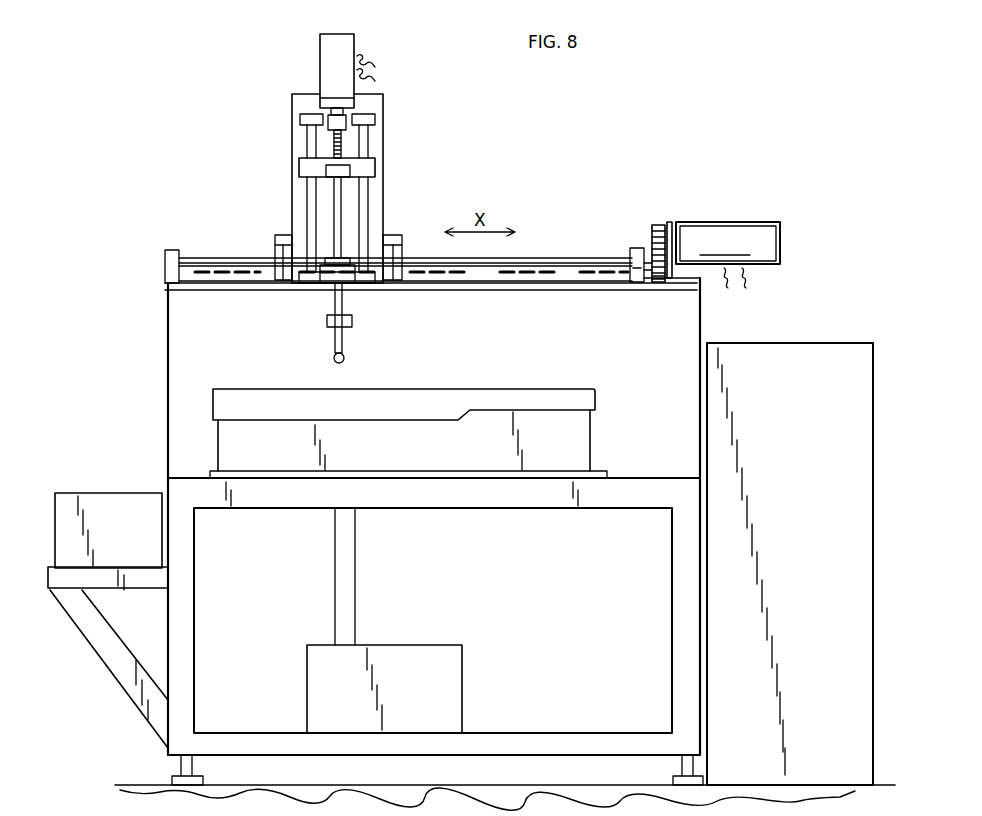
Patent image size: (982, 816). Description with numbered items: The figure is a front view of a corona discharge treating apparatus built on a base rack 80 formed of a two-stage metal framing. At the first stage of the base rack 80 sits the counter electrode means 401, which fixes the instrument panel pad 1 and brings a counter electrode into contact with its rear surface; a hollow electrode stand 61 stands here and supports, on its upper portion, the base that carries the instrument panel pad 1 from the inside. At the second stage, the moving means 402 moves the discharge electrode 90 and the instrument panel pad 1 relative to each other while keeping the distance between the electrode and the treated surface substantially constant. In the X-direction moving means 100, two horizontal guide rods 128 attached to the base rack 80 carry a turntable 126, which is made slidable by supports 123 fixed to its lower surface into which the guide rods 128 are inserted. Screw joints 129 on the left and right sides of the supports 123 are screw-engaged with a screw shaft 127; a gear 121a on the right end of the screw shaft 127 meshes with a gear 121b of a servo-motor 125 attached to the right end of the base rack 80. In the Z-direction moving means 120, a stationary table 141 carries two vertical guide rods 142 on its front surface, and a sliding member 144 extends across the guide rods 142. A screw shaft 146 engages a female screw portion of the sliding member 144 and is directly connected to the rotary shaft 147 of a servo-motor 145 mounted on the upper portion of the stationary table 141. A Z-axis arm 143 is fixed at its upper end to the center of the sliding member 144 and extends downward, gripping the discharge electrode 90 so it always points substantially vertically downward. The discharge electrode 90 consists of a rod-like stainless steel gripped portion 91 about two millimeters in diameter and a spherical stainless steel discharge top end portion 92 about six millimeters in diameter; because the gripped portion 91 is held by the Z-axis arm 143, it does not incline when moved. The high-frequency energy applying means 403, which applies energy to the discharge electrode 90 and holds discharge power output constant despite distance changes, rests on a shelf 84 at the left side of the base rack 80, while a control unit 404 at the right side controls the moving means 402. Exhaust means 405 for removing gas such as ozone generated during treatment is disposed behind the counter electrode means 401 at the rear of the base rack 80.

The instrument panel pad 1 is at (536, 388).
The electrode stand 61 is at (592, 425).
The base rack 80 is at (166, 380).
The shelf 84 is at (126, 588).
The discharge electrode 90 is at (344, 338).
The gripped portion 91 is at (334, 340).
The spherical discharge top end portion 92 is at (334, 359).
The X-direction moving means 100 is at (547, 259).
The Z-direction moving means 120 is at (329, 158).
The gear 121a is at (657, 283).
The gear 121b is at (656, 226).
The supports 123 is at (288, 281).
The servo-motor 125 is at (718, 232).
The turntable 126 is at (276, 236).
The screw shaft 127 is at (638, 283).
The guide rods 128 is at (590, 262).
The screw joints 129 is at (278, 252).
The stationary table 141 is at (292, 111).
The guide rods 142 is at (306, 190).
The Z-axis arm 143 is at (355, 186).
The sliding member 144 is at (374, 164).
The servo-motor 145 is at (355, 47).
The screw shaft 146 is at (344, 143).
The rotary shaft 147 is at (352, 112).
The counter electrode means 401 is at (443, 413).
The moving means 402 is at (380, 201).
The high-frequency energy applying means 403 is at (101, 594).
The control unit 404 is at (894, 373).
The exhaust means 405 is at (433, 616).